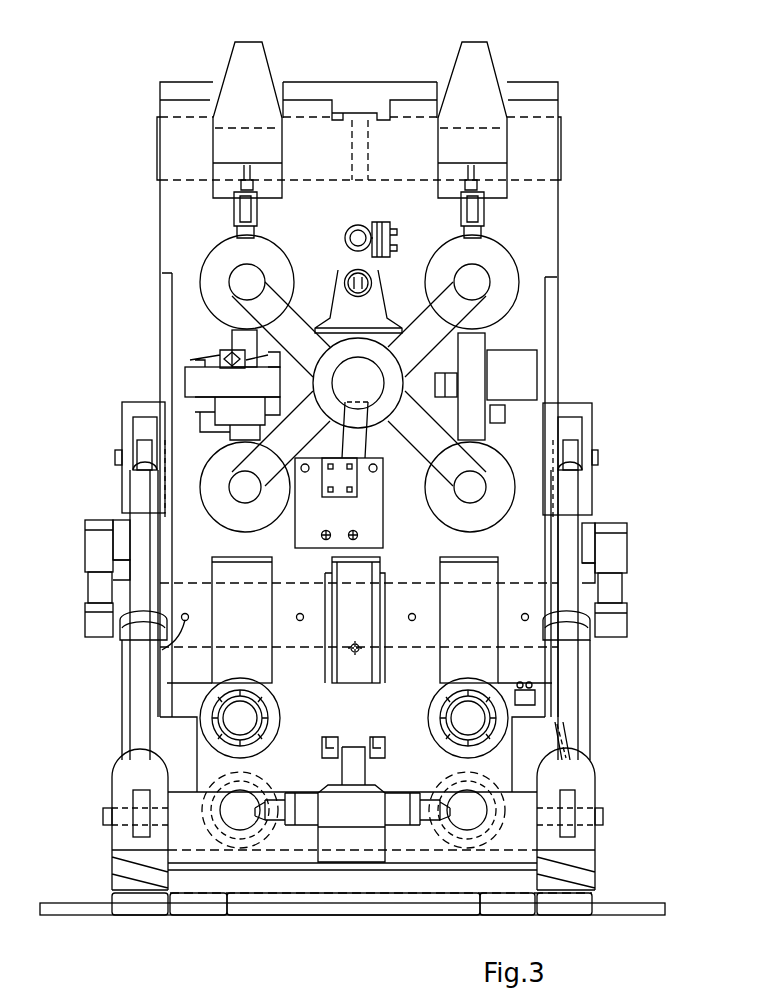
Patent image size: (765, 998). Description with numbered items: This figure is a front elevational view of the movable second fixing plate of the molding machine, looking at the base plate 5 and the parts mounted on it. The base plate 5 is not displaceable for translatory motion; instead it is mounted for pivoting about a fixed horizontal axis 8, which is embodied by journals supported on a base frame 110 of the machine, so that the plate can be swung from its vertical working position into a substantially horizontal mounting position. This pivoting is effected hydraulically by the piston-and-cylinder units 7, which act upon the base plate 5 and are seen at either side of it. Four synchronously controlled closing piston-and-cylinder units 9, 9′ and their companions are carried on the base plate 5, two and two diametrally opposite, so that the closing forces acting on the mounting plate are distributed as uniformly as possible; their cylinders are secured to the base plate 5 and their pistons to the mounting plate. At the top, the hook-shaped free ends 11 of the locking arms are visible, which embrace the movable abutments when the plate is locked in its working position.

The free ends of locking arms 11 is at (463, 80).
The hydraulic piston-and-cylinder unit 9 is at (215, 293).
The hydraulic piston-and-cylinder unit 9′ is at (490, 462).
The hydraulic piston-and-cylinder units 7 is at (135, 493).
The base plate 5 is at (185, 527).
The fixed horizontal axis 8 is at (165, 643).
The base frame 110 is at (528, 752).